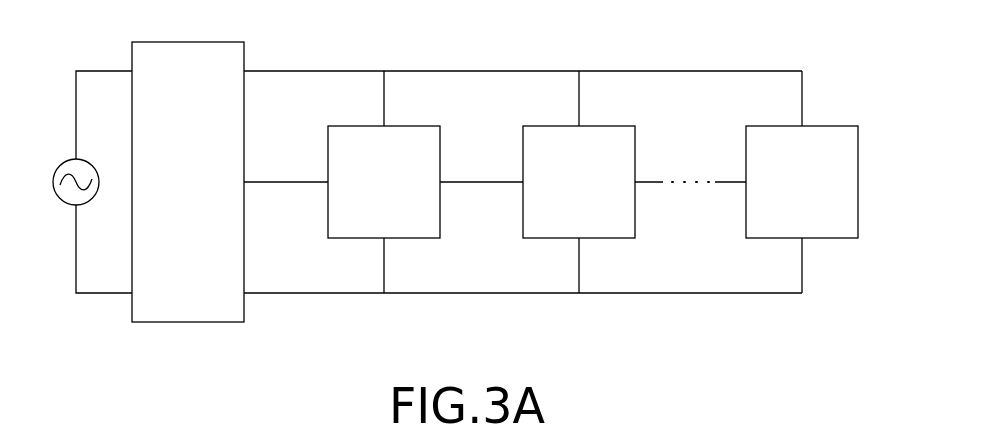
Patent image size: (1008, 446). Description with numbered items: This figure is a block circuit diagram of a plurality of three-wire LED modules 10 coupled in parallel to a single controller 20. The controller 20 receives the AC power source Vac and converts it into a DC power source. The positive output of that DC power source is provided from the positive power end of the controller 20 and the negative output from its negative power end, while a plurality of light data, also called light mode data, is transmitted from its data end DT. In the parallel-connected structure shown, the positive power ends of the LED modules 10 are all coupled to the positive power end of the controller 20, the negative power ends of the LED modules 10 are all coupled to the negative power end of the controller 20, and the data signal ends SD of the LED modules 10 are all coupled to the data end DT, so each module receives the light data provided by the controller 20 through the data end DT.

The controller 20 is at (188, 48).
The LED module 10 is at (423, 132).
The AC power source Vac is at (69, 182).
The data end DT is at (265, 184).
The data signal end SD is at (519, 167).